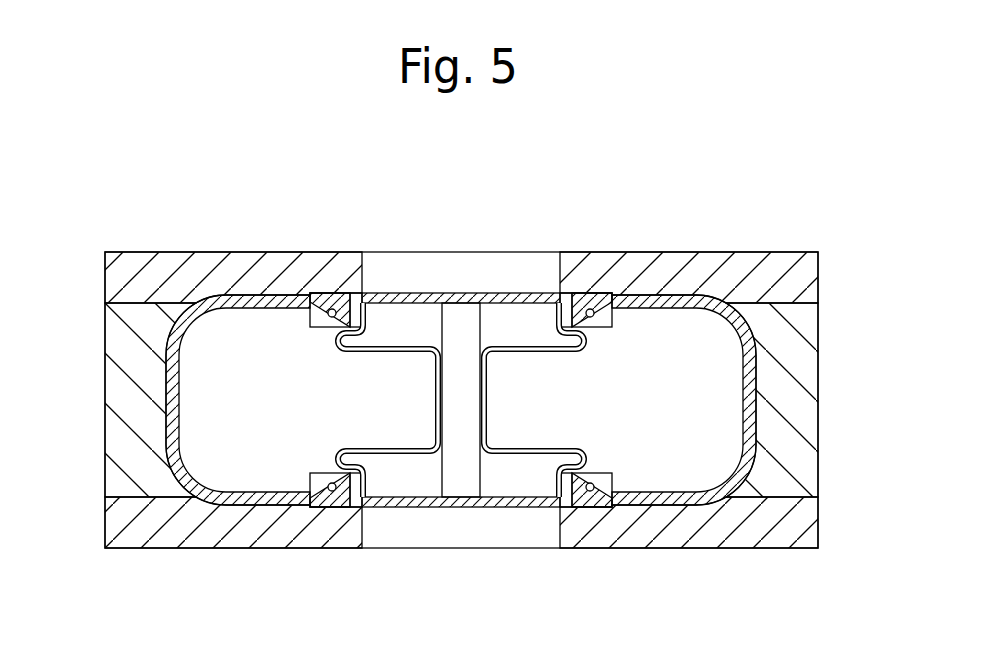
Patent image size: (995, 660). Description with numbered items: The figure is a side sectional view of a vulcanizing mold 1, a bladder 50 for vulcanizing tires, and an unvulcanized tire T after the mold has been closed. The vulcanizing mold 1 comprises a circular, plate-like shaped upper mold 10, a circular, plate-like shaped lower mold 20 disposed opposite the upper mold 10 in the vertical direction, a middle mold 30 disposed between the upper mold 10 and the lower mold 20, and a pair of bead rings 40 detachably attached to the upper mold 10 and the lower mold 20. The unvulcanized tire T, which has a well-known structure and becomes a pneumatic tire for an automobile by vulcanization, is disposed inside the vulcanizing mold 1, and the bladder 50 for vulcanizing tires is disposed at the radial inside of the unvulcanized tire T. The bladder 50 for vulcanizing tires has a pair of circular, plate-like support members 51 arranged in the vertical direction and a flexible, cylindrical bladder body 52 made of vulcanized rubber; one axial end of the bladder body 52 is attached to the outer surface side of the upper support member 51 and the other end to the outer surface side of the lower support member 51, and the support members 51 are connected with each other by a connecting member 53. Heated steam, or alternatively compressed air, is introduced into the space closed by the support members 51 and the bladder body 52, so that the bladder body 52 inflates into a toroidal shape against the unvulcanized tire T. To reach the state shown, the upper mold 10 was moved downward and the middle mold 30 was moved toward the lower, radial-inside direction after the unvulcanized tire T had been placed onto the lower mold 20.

The vulcanizing mold 1 is at (137, 252).
The upper mold 10 is at (277, 262).
The lower mold 20 is at (243, 532).
The middle mold 30 is at (118, 386).
The bead rings 40 is at (615, 297).
The bladder for vulcanizing tires 50 is at (531, 292).
The support members 51 is at (415, 290).
The bladder body 52 is at (527, 346).
The connecting member 53 is at (462, 480).
The unvulcanized tire T is at (695, 305).